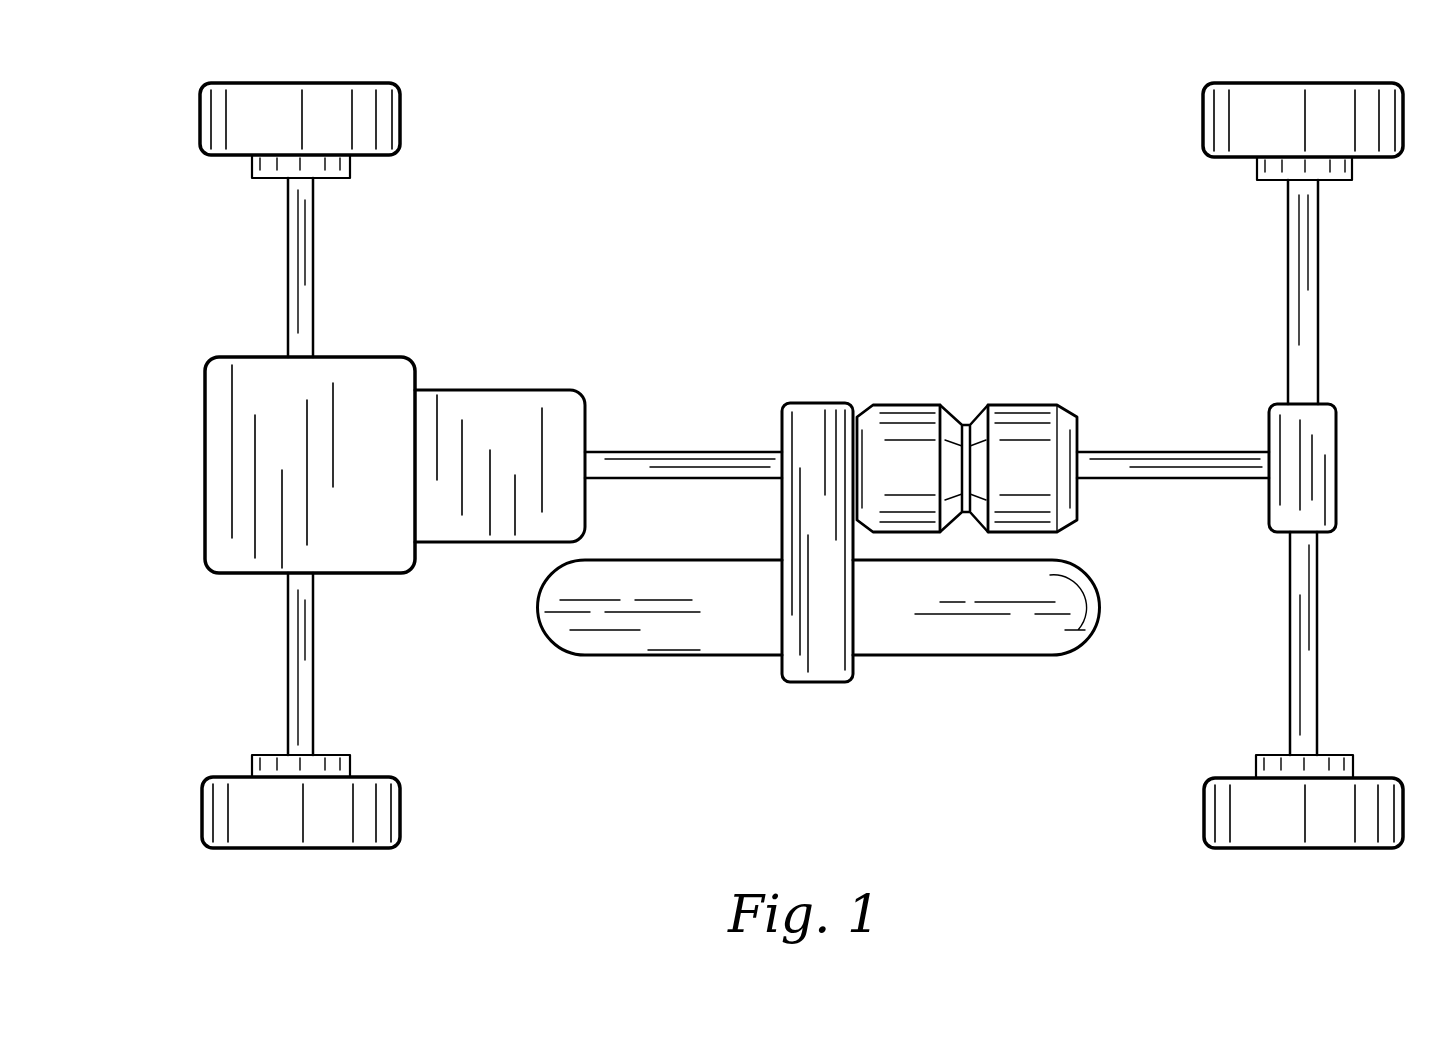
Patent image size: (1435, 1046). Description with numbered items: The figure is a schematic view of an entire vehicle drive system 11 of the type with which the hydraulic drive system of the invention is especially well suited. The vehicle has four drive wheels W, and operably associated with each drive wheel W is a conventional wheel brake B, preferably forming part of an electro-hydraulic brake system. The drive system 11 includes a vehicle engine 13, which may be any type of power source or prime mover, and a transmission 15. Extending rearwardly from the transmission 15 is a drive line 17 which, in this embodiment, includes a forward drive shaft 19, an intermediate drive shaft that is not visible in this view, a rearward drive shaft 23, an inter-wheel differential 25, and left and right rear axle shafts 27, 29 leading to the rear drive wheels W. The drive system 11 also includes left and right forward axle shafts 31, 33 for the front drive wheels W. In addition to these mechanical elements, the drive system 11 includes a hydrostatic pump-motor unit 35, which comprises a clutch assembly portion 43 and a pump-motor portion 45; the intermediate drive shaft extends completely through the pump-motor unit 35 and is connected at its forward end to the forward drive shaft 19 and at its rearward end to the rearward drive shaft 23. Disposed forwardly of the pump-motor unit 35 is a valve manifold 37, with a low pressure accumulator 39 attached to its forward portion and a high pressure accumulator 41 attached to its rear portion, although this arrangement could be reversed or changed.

The vehicle drive system 11 is at (817, 358).
The vehicle engine 13 is at (288, 438).
The transmission 15 is at (500, 415).
The drive line 17 is at (725, 438).
The forward drive shaft 19 is at (680, 470).
The rearward drive shaft 23 is at (1172, 470).
The inter-wheel differential 25 is at (1333, 460).
The left rear axle shaft 27 is at (1313, 640).
The right rear axle shaft 29 is at (1312, 292).
The left forward axle shaft 31 is at (300, 654).
The right forward axle shaft 33 is at (298, 283).
The hydrostatic pump-motor unit 35 is at (979, 377).
The valve manifold 37 is at (827, 660).
The low pressure accumulator 39 is at (645, 640).
The high pressure accumulator 41 is at (972, 640).
The clutch assembly portion 43 is at (908, 418).
The pump-motor portion 45 is at (1045, 429).
The drive wheel W is at (387, 119).
The wheel brake B is at (333, 172).